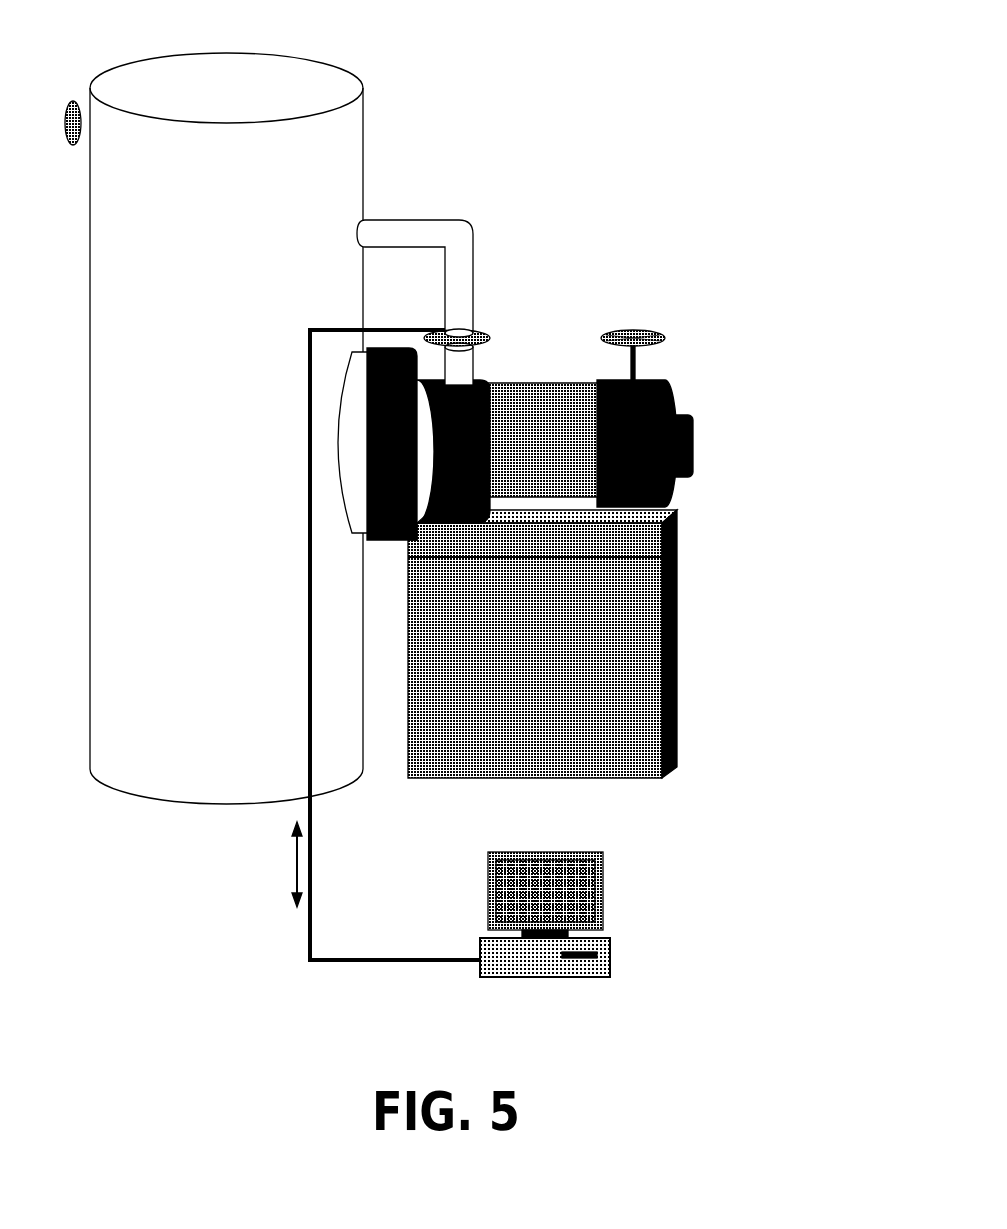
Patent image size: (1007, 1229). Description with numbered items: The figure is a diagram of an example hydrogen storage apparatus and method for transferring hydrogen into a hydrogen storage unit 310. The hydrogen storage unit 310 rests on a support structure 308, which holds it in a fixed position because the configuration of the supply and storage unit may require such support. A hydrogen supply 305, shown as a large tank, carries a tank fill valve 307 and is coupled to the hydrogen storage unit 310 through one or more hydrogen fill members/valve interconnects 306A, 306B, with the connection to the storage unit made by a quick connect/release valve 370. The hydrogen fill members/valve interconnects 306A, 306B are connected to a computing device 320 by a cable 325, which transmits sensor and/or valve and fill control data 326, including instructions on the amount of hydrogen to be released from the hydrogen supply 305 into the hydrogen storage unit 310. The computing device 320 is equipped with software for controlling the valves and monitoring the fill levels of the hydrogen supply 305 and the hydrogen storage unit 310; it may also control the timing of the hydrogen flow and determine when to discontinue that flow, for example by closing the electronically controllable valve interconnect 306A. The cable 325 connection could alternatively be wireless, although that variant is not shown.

The hydrogen supply 305 is at (226, 428).
The tank fill valve 307 is at (73, 101).
The hydrogen fill member/valve interconnect 306A is at (467, 218).
The hydrogen fill member/valve interconnect 306B is at (382, 353).
The quick connect/release valve 370 is at (478, 331).
The hydrogen storage unit 310 is at (691, 365).
The support structure 308 is at (542, 663).
The sensor and/or valve and fill control data 326 is at (283, 858).
The cable 325 is at (395, 658).
The computing device 320 is at (547, 947).